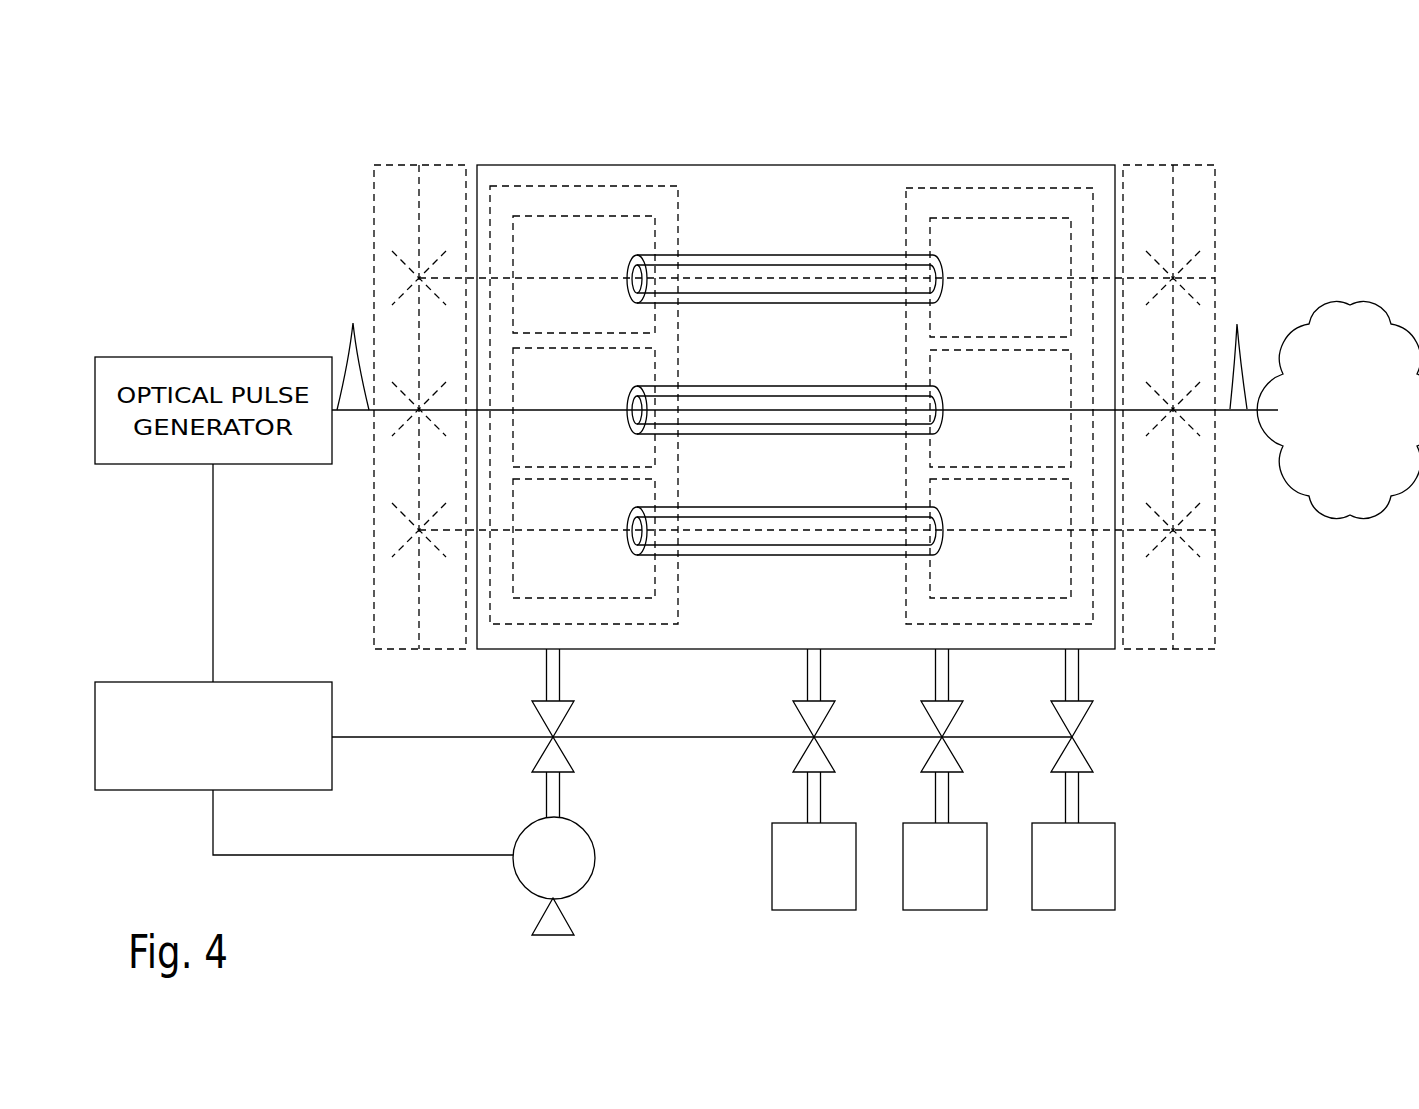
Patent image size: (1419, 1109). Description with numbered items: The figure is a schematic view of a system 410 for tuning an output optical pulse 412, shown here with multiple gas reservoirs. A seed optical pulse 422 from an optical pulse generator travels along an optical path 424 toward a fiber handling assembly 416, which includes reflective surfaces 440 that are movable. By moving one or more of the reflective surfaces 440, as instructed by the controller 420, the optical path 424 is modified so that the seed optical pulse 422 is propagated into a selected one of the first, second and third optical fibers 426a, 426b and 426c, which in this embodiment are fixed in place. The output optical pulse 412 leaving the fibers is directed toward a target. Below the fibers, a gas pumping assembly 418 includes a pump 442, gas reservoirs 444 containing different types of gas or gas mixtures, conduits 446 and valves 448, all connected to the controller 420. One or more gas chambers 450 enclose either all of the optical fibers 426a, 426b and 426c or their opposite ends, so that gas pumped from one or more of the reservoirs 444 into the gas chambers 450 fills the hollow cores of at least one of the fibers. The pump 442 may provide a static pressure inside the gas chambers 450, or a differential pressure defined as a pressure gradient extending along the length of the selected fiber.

The system 410 is at (224, 137).
The output optical pulse 412 is at (1240, 325).
The fiber handling assembly 416 is at (418, 165).
The gas pumping assembly 418 is at (1248, 730).
The controller 420 is at (125, 682).
The seed optical pulse 422 is at (350, 324).
The optical path 424 is at (533, 405).
The first optical fiber 426a is at (718, 255).
The second optical fiber 426b is at (829, 386).
The third optical fiber 426c is at (893, 507).
The reflective surfaces 440 is at (395, 262).
The pump 442 is at (520, 880).
The gas reservoirs 444 is at (775, 823).
The conduits 446 is at (718, 737).
The valves 448 is at (563, 730).
The gas chambers 450 is at (627, 217).